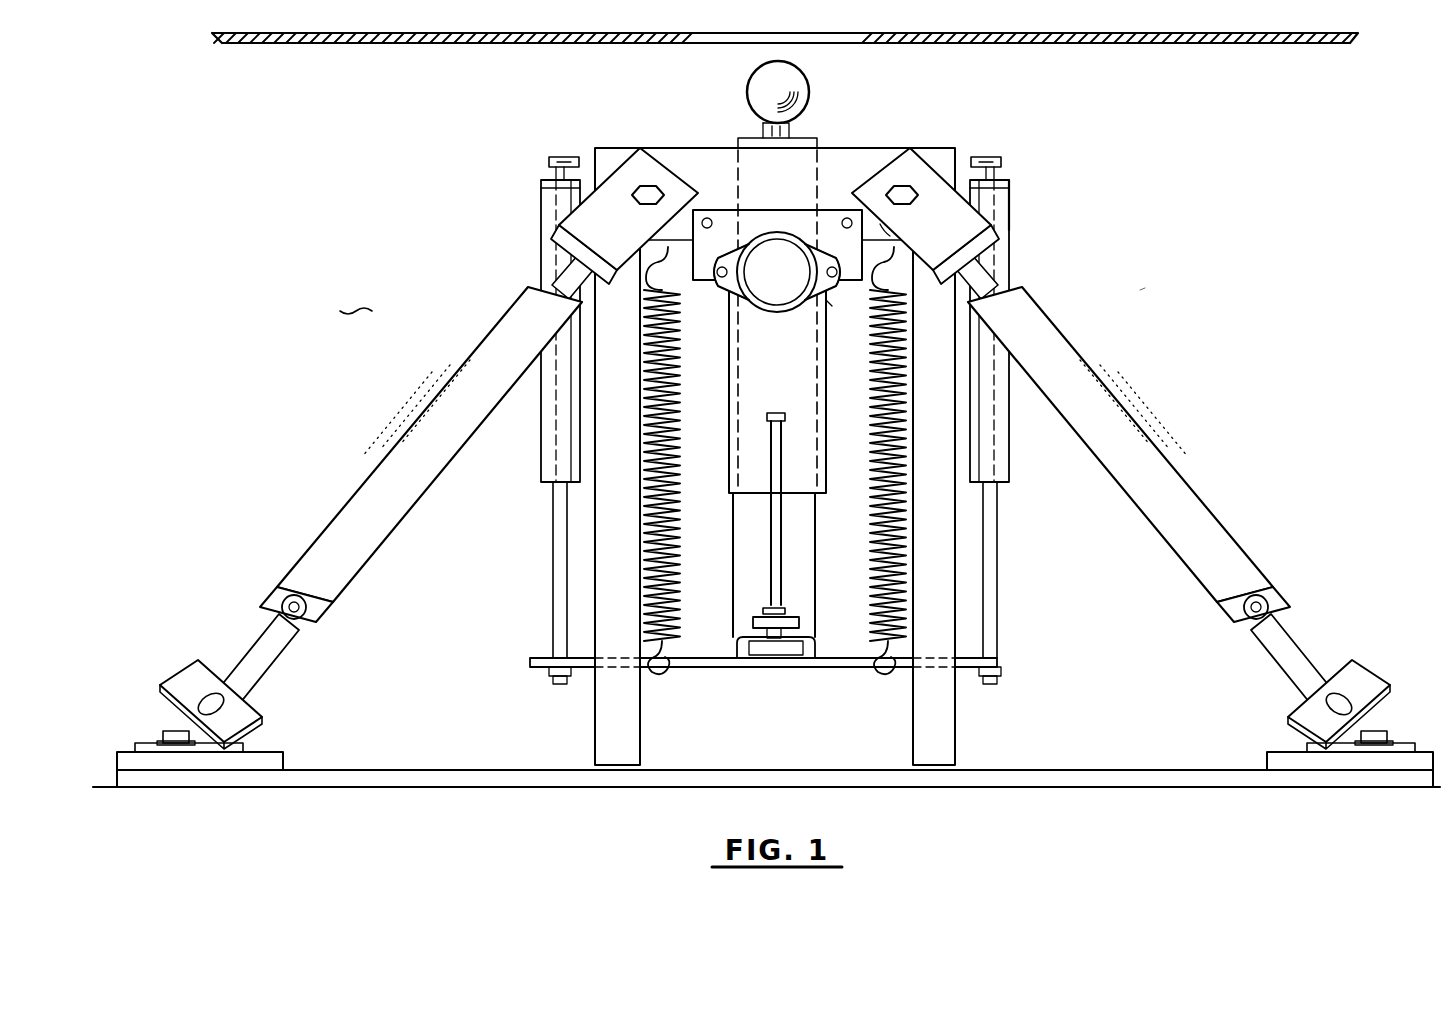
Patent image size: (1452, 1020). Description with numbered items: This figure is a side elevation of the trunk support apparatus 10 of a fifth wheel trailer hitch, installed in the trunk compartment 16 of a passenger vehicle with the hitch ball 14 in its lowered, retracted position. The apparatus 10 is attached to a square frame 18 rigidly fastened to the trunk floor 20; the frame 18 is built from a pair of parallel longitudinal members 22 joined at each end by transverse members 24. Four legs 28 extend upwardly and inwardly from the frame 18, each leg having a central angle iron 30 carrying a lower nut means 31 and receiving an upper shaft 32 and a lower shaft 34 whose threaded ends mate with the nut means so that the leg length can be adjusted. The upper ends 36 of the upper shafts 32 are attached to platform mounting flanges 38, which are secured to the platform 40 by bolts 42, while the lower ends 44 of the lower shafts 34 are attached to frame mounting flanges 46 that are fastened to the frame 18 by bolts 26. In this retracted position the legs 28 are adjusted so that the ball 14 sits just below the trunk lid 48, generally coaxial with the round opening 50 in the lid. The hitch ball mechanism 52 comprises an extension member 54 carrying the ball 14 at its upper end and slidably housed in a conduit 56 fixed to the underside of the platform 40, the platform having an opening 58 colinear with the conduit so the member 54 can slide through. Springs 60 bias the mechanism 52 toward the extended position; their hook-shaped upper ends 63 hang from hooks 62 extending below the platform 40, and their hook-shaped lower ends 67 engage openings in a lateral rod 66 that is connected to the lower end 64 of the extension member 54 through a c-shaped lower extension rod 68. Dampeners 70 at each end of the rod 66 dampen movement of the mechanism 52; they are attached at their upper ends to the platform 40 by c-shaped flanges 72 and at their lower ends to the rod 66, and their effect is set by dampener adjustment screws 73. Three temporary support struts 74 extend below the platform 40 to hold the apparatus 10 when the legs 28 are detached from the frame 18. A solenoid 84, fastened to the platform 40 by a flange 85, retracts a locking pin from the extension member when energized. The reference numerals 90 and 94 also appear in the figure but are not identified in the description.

The trunk support apparatus 10 is at (1150, 287).
The hitch ball 14 is at (748, 70).
The trunk compartment 16 is at (357, 297).
The square frame 18 is at (459, 758).
The trunk floor 20 is at (1086, 762).
The longitudinal members 22 is at (277, 752).
The transverse members 24 is at (404, 792).
The bolts 26 is at (163, 730).
The legs 28 is at (387, 436).
The central angle iron 30 is at (455, 350).
The lower nut means 31 is at (313, 612).
The upper shaft 32 is at (557, 270).
The lower shaft 34 is at (268, 650).
The upper ends 36 is at (1014, 222).
The platform mounting flanges 38 is at (648, 160).
The platform 40 is at (872, 148).
The bolts 42 is at (655, 190).
The lower ends 44 is at (243, 712).
The frame mounting flanges 46 is at (203, 656).
The trunk lid 48 is at (1120, 47).
The round opening 50 is at (812, 44).
The hitch ball mechanism 52 is at (728, 700).
The extension member 54 is at (808, 148).
The conduit 56 is at (728, 465).
The opening 58 is at (738, 148).
The springs 60 is at (866, 380).
The hooks 62 is at (882, 227).
The hook-shaped upper ends 63 is at (826, 293).
The lower end 64 is at (722, 667).
The lateral rod 66 is at (1021, 655).
The hook-shaped lower ends 67 is at (890, 667).
The c-shaped lower extension rod 68 is at (820, 658).
The dampeners 70 is at (535, 226).
The c-shaped flange 72 is at (543, 182).
The dampener adjustment screw 73 is at (555, 158).
The temporary support struts 74 is at (605, 712).
The solenoid 84 is at (763, 288).
The flange 85 is at (718, 232).
The rod 90 is at (784, 517).
The nut 94 is at (785, 610).